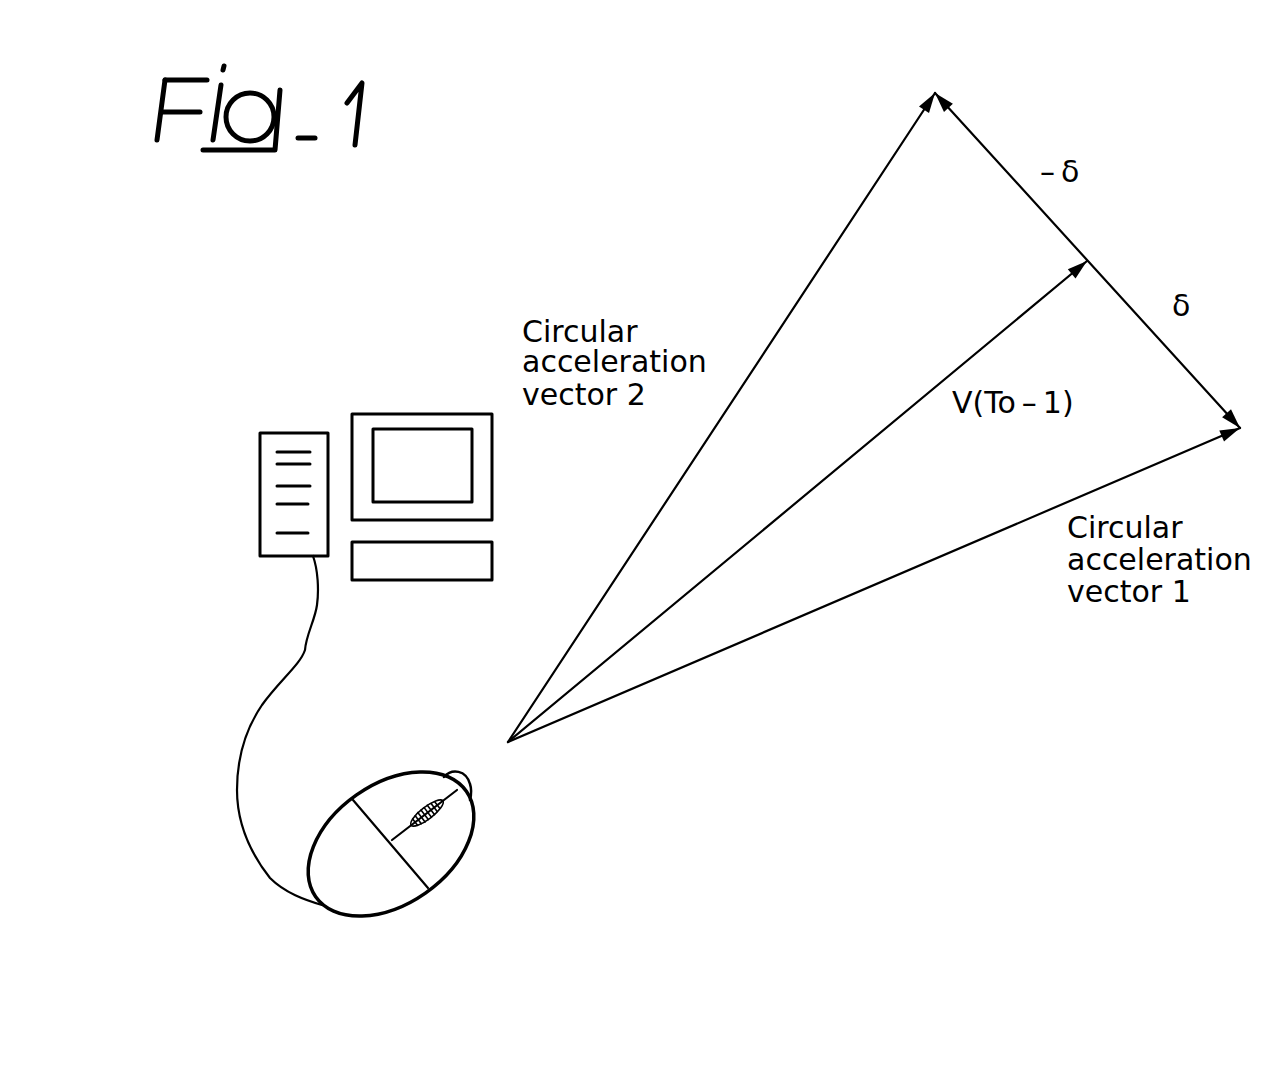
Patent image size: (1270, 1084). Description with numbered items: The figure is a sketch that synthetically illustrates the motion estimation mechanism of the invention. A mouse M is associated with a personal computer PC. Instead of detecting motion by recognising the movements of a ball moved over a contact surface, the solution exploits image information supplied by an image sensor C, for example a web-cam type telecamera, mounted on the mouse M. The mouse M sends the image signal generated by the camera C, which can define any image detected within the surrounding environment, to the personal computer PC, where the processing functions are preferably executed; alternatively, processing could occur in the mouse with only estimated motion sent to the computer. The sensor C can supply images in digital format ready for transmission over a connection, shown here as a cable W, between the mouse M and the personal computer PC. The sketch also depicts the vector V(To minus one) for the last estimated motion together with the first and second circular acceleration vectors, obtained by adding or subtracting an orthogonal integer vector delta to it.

The personal computer PC is at (369, 400).
The cable W is at (305, 650).
The mouse M is at (410, 888).
The image sensor C is at (467, 784).